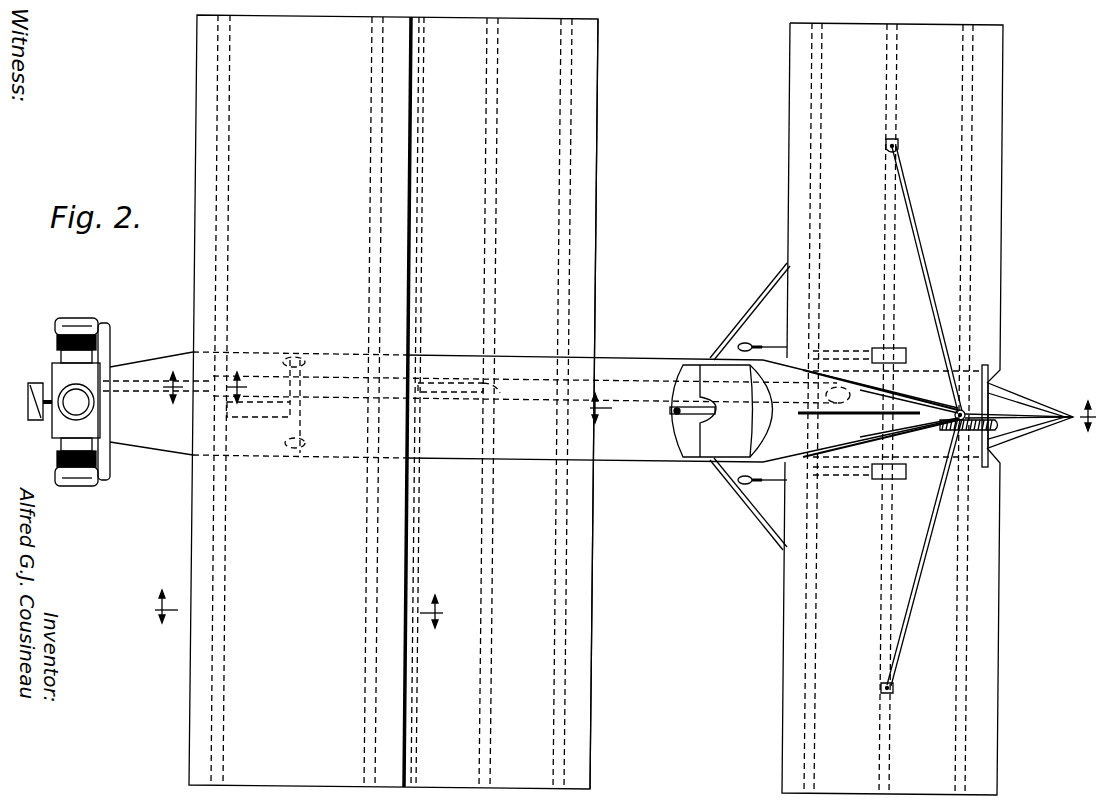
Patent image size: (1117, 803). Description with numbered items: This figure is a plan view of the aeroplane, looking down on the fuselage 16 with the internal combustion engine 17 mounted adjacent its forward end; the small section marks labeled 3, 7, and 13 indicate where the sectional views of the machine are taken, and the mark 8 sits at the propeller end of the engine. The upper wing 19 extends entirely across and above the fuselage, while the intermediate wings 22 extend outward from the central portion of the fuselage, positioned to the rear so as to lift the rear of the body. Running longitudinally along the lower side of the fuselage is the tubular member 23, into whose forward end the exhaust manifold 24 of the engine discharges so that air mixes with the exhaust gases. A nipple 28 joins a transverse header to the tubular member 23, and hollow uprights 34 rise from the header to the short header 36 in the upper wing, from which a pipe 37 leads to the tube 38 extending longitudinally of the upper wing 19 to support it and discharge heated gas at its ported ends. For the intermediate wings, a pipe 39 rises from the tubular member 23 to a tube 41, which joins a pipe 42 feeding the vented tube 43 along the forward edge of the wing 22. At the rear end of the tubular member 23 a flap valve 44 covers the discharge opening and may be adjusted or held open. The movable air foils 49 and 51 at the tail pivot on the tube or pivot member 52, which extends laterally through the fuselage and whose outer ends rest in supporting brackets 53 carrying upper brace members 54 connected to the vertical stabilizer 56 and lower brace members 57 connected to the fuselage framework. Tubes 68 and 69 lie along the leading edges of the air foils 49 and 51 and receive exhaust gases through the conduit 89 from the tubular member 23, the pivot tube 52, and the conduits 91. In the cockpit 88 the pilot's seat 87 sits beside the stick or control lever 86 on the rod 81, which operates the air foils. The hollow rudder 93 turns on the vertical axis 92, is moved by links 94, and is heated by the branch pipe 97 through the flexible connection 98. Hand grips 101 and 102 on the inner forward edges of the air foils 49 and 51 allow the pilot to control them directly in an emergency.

The section line 3- 3 is at (844, 412).
The section line 7- 7 is at (204, 381).
The propeller 8 is at (28, 402).
The section line 13- 13 is at (299, 609).
The fuselage 16 is at (530, 445).
The internal combustion engine 17 is at (83, 320).
The upper wing 19 is at (200, 112).
The intermediate wings 22 is at (598, 260).
The tubular member 23 is at (520, 382).
The exhaust manifold 24 is at (112, 347).
The nipple 28 is at (300, 386).
The hollow uprights 34 is at (292, 357).
The short header 36 is at (300, 433).
The pipe 37 is at (268, 409).
The tube 38 is at (222, 563).
The pipe 39 is at (500, 390).
The tube 41 is at (497, 546).
The pipe 42 is at (452, 393).
The vented tube 43 is at (432, 308).
The flap valve 44 is at (850, 396).
The air foil 49 is at (997, 631).
The air foil 51 is at (1003, 141).
The tube or pivot member 52 is at (880, 626).
The supporting brackets 53 is at (899, 145).
The upper brace members 54 is at (913, 243).
The vertical stabilizer 56 is at (870, 416).
The lower brace members 57 is at (758, 300).
The tube 68 is at (805, 648).
The tube 69 is at (817, 193).
The rod 81 is at (702, 412).
The stick or control lever 86 is at (670, 412).
The pilot's seat 87 is at (707, 377).
The cockpit 88 is at (678, 373).
The pipe or conduit 89 is at (792, 375).
The pipes or conduits 91 is at (848, 352).
The vertical axis 92 is at (990, 411).
The hollow rudder 93 is at (1057, 412).
The links 94 is at (985, 362).
The branch pipe 97 is at (922, 429).
The flexible connection 98 is at (1015, 433).
The hand grip 101 is at (738, 483).
The hand grip 102 is at (738, 346).